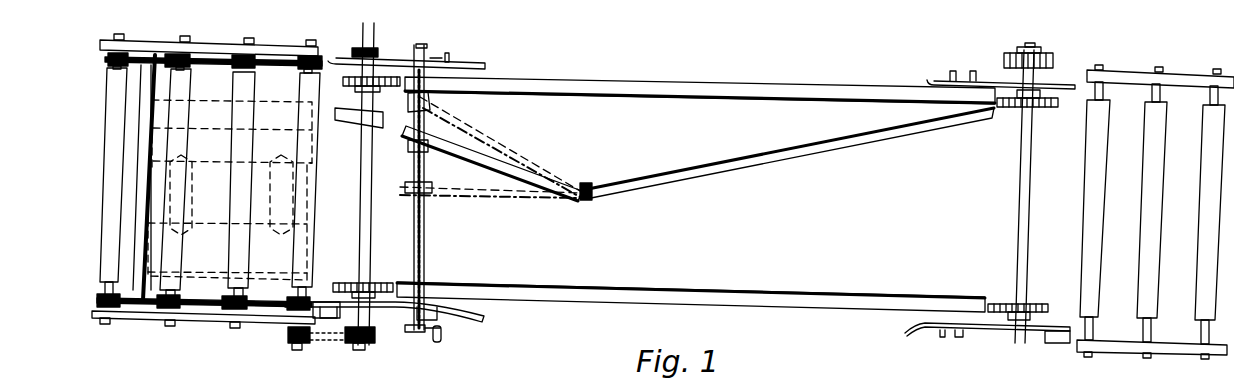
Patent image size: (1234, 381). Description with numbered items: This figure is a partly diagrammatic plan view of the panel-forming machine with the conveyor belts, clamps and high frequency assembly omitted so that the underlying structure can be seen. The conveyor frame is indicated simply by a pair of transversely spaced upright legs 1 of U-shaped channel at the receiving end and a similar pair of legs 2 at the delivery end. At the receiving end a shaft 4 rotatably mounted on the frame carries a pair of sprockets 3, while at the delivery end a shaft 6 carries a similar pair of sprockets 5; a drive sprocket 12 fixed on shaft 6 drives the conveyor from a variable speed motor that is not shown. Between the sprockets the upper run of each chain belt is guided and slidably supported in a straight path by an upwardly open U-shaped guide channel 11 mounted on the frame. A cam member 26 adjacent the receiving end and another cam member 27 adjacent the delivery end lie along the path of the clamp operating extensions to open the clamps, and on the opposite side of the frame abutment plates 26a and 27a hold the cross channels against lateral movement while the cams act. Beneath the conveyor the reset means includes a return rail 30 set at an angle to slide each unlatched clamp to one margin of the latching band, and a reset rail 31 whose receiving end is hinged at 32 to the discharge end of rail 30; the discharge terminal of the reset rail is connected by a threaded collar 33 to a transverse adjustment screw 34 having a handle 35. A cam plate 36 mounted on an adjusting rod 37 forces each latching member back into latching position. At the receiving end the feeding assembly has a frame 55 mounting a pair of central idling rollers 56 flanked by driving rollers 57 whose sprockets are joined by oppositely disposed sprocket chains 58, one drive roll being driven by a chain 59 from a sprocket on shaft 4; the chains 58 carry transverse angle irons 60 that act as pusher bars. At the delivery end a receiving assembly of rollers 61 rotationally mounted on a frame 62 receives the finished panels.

The upright legs 1 is at (436, 58).
The legs 2 is at (958, 338).
The sprockets 3 is at (349, 268).
The shaft 4 is at (364, 215).
The delivery end sprockets 5 is at (1049, 108).
The shaft 6 is at (1030, 187).
The guide channel member 11 is at (669, 92).
The drive sprocket 12 is at (1006, 60).
The cam member 26 is at (484, 311).
The abutment plate 26a is at (483, 64).
The cam member 27 is at (906, 331).
The abutment plate 27a is at (933, 80).
The return rail 30 is at (741, 166).
The reset rail 31 is at (476, 156).
The hinge 32 is at (586, 187).
The threaded collar 33 is at (414, 146).
The transverse adjustment screw 34 is at (415, 170).
The handle 35 is at (442, 338).
The cam plate 36 is at (362, 116).
The adjusting rod 37 is at (366, 96).
The frame 55 is at (166, 46).
The idling rollers 56 is at (231, 279).
The driving rollers 57 is at (106, 179).
The sprocket chains 58 is at (283, 60).
The chain 59 is at (333, 334).
The angle irons 60 is at (134, 241).
The rollers 61 is at (1152, 222).
The frame 62 is at (1183, 347).